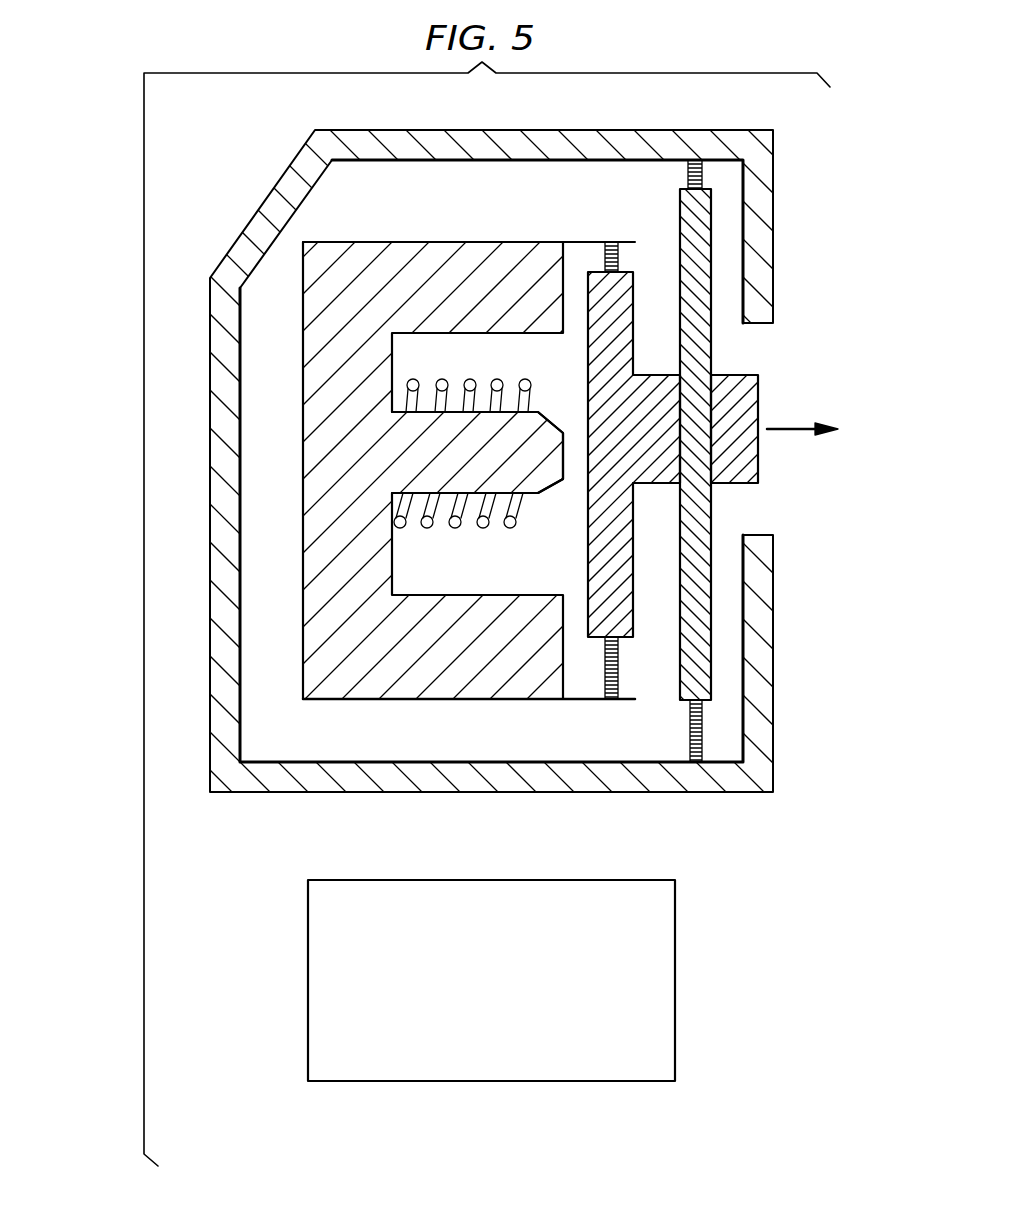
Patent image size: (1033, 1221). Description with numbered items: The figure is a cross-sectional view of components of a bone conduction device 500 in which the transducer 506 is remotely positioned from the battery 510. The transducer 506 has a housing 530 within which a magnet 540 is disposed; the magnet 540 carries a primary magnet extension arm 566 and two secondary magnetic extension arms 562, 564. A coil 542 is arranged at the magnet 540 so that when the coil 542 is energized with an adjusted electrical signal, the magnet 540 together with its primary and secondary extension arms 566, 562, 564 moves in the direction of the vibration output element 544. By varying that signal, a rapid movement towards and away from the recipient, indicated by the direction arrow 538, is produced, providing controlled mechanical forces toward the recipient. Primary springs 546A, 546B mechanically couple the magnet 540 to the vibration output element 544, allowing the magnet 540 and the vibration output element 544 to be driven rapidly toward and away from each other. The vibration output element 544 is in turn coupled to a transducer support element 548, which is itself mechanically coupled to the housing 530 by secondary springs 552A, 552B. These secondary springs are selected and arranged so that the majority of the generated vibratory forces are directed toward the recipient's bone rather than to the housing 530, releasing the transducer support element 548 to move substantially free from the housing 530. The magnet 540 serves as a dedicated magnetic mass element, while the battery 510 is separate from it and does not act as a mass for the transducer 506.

The bone conduction device 500 is at (126, 741).
The transducer 506 is at (246, 170).
The battery 510 is at (676, 980).
The housing 530 is at (210, 394).
The direction arrow 538 is at (790, 432).
The magnet 540 is at (303, 470).
The coil 542 is at (413, 378).
The vibration output element 544 is at (588, 575).
The primary spring 546A is at (619, 258).
The primary spring 546B is at (619, 688).
The transducer support element 548 is at (712, 365).
The secondary spring 552A is at (687, 172).
The secondary spring 552B is at (690, 753).
The secondary magnetic extension arm 562 is at (492, 700).
The secondary magnetic extension arm 564 is at (398, 242).
The primary magnet extension arm 566 is at (548, 415).